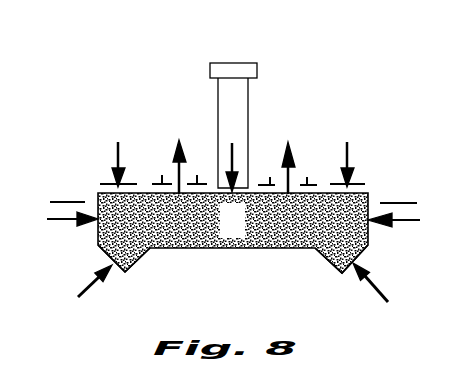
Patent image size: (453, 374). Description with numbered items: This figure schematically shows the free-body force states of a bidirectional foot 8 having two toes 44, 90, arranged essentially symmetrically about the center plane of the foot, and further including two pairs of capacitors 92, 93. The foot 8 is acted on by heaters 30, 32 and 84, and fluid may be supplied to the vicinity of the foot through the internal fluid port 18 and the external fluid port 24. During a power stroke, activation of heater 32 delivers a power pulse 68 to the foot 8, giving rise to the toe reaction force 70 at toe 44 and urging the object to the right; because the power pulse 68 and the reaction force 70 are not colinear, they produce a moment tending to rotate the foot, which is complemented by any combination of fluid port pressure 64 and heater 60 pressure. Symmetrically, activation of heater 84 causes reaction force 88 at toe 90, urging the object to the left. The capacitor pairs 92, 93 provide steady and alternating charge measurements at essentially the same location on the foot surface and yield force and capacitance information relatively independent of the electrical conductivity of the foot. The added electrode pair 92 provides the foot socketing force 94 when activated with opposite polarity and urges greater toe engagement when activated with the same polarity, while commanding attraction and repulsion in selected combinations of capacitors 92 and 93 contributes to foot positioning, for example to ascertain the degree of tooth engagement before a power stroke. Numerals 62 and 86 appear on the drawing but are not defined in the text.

The foot 8 is at (239, 233).
The internal fluid port 18 is at (248, 105).
The external fluid port 24 is at (209, 65).
The heater 30 is at (105, 183).
The heater 32 is at (60, 202).
The toe 44 is at (327, 262).
The heater pressure 60 is at (118, 150).
The contact pad 62 is at (300, 183).
The fluid port pressure 64 is at (218, 138).
The power pulse 68 is at (60, 220).
The toe reaction force 70 is at (376, 285).
The heater 84 is at (387, 203).
The right inlet arrow 86 is at (380, 223).
The reaction force 88 is at (90, 287).
The toe 90 is at (144, 255).
The capacitors 92 is at (152, 183).
The capacitors 93 is at (263, 183).
The foot socketing force 94 is at (175, 155).